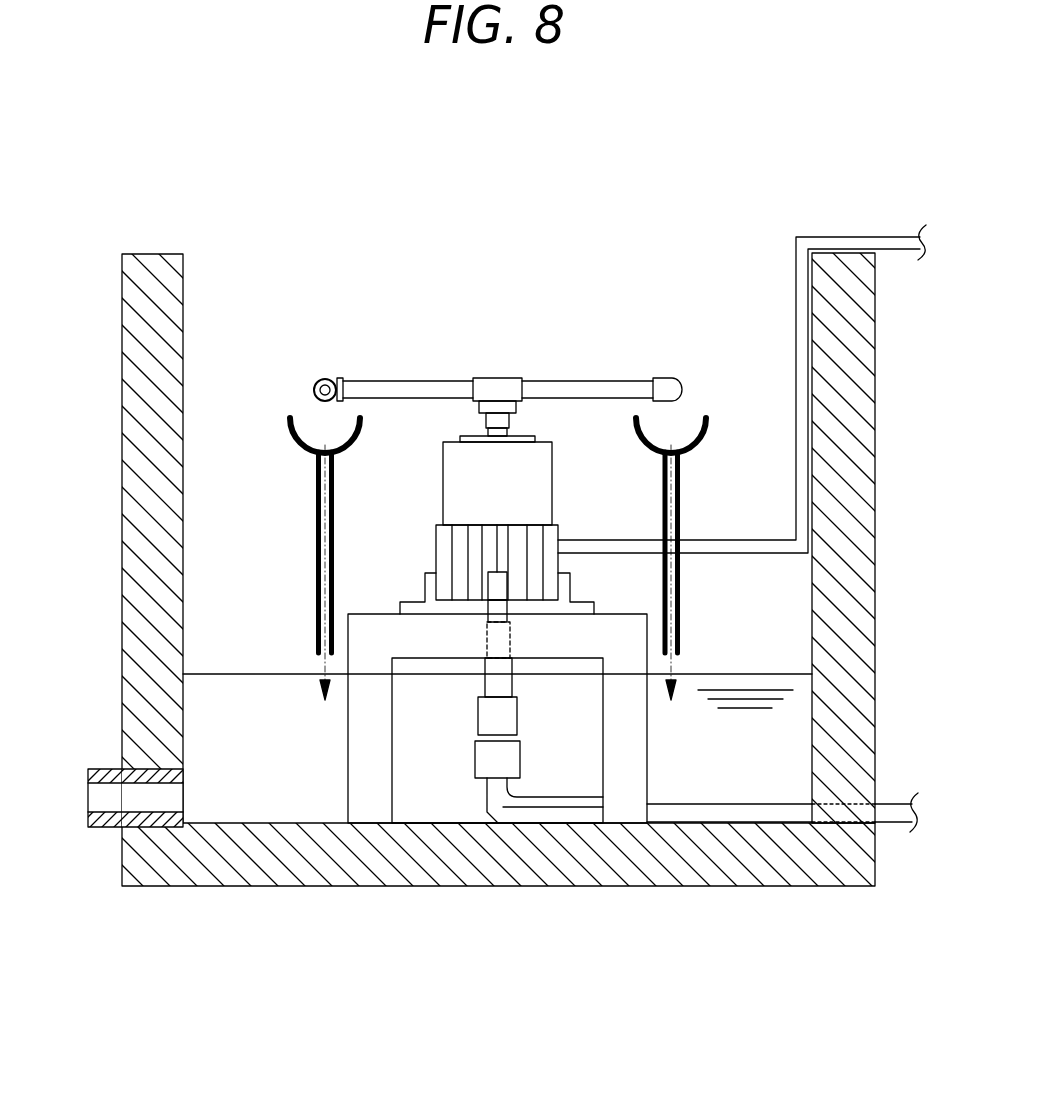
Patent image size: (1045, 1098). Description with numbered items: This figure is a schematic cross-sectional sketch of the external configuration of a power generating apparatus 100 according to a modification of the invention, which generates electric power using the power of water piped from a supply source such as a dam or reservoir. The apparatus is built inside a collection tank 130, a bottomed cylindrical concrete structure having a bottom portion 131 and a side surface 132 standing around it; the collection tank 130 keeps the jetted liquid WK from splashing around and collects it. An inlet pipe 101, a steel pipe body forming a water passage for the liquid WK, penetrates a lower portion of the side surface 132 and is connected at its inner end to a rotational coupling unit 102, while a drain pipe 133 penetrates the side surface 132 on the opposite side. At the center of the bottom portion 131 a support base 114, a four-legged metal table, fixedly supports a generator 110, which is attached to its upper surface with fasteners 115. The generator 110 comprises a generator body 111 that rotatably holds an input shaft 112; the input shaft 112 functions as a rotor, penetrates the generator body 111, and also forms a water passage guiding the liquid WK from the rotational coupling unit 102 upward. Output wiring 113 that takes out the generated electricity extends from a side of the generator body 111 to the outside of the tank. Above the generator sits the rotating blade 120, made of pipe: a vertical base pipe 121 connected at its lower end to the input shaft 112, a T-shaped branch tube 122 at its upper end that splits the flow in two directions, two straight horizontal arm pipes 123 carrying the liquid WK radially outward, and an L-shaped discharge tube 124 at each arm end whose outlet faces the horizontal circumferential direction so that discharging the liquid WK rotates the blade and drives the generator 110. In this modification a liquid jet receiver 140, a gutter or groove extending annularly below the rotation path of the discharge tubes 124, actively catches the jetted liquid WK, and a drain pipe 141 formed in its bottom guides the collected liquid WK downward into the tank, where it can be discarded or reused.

The power generating apparatus 100 is at (118, 102).
The inlet pipe 101 is at (568, 797).
The rotational coupling unit 102 is at (474, 738).
The generator 110 is at (455, 518).
The generator body 111 is at (443, 502).
The input shaft 112 is at (515, 432).
The output wiring 113 is at (722, 538).
The support base 114 is at (347, 746).
The fasteners 115 is at (425, 575).
The rotating blade 120 is at (493, 379).
The base pipe 121 is at (485, 420).
The branch tube 122 is at (496, 378).
The arm pipes 123 is at (438, 380).
The discharge tube 124 is at (322, 380).
The collection tank 130 is at (131, 251).
The bottom portion 131 is at (277, 823).
The side surface 132 is at (877, 440).
The drain pipe 133 is at (95, 770).
The liquid jet receiver 140 is at (300, 450).
The drain pipe 141 is at (317, 517).
The liquid WK is at (775, 673).